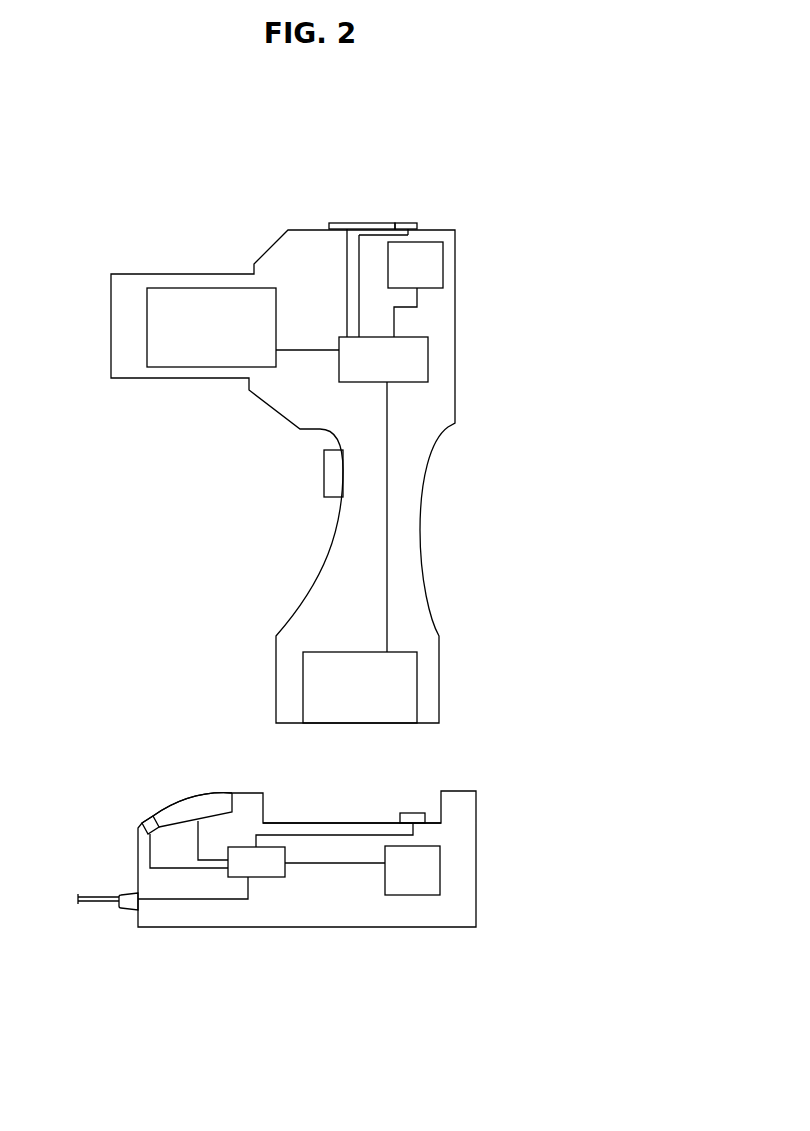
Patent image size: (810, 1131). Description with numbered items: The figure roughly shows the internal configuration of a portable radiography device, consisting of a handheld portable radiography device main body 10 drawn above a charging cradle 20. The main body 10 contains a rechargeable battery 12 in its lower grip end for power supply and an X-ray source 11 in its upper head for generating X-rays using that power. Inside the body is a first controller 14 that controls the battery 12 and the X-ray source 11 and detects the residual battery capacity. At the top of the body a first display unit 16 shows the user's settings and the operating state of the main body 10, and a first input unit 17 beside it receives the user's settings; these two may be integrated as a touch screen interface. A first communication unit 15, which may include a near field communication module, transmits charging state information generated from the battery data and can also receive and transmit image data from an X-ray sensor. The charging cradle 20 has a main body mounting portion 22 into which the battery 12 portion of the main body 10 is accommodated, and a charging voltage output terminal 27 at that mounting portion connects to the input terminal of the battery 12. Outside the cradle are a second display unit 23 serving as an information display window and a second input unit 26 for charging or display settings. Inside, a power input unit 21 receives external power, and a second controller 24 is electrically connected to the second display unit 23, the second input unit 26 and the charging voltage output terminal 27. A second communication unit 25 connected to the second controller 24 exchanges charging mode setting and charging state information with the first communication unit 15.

The portable radiography device main body 10 is at (466, 191).
The X-ray source 11 is at (187, 312).
The rechargeable battery 12 is at (400, 683).
The first controller 14 is at (417, 372).
The first communication unit 15 is at (433, 263).
The first display unit 16 is at (362, 223).
The first input unit 17 is at (403, 223).
The charging cradle 20 is at (495, 773).
The power input unit 21 is at (130, 913).
The main body mounting portion 22 is at (301, 799).
The second display unit 23 is at (182, 808).
The second controller 24 is at (272, 870).
The second communication unit 25 is at (417, 880).
The second input unit 26 is at (145, 820).
The charging voltage output terminal 27 is at (417, 815).